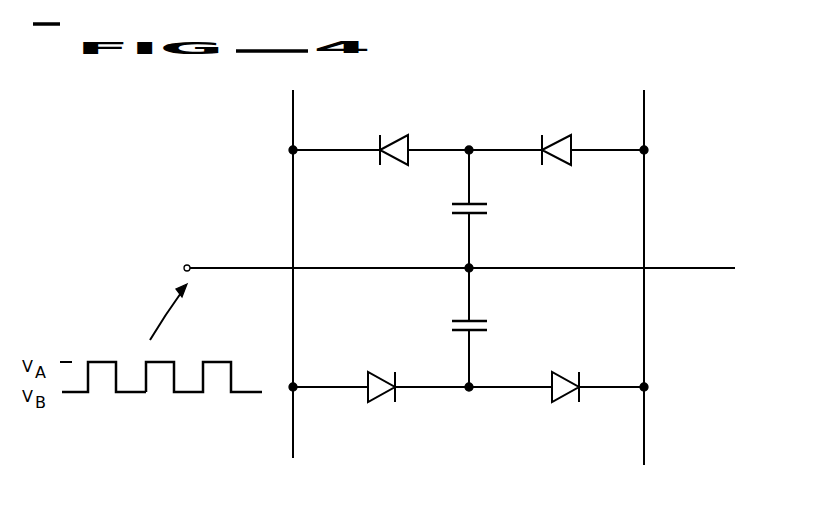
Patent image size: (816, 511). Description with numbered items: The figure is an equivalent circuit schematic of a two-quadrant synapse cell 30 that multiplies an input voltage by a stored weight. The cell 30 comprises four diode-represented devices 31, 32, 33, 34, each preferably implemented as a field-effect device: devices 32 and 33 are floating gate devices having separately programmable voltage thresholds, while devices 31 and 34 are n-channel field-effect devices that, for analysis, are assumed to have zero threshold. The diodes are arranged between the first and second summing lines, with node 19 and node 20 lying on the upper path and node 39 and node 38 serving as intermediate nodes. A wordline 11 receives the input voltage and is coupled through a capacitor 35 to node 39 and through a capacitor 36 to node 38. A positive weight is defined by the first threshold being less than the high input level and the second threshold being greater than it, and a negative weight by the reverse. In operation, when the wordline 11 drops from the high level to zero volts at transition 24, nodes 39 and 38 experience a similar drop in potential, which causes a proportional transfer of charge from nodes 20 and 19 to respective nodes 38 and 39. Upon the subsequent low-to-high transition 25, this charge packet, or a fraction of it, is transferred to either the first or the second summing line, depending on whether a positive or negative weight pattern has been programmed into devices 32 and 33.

The wordline 11 is at (683, 266).
The node 19 is at (293, 150).
The node 20 is at (648, 150).
The transition 24 is at (118, 374).
The low-to-high transition 25 is at (142, 372).
The two-quadrant synapse cell 30 is at (664, 66).
The device 31 is at (399, 138).
The device 32 is at (564, 138).
The device 33 is at (381, 378).
The device 34 is at (564, 378).
The capacitor 35 is at (449, 211).
The capacitor 36 is at (449, 321).
The node 38 is at (471, 391).
The node 39 is at (471, 146).